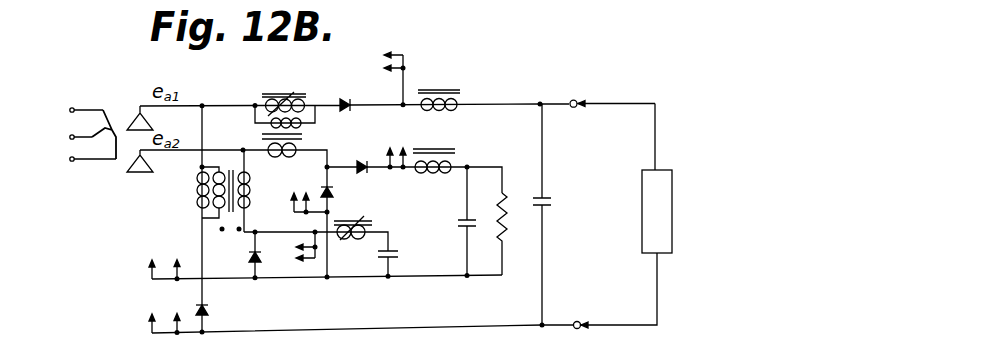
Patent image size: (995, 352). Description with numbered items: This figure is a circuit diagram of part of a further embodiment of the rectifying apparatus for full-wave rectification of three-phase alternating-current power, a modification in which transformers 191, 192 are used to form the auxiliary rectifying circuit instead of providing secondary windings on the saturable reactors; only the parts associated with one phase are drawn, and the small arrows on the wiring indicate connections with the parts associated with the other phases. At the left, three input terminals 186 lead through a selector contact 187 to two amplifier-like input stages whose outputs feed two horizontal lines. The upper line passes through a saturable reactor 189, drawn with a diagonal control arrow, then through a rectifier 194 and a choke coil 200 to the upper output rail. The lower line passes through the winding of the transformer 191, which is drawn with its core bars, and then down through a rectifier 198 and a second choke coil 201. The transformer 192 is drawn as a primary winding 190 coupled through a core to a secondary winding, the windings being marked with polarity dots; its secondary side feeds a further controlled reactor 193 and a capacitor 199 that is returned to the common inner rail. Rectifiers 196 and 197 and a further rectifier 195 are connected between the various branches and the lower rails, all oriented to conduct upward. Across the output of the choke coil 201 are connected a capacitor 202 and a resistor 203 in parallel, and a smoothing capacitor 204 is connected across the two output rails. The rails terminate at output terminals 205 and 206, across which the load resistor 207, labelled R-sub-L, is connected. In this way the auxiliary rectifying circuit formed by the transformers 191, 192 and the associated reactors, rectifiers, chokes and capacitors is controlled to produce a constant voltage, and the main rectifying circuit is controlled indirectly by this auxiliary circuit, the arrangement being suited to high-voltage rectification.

The input terminals 186 is at (73, 134).
The selector switch 187 is at (119, 122).
The adjustable inductor 189 is at (279, 93).
The transformer primary winding 190 is at (198, 199).
The transformer 191 is at (305, 138).
The transformer 192 is at (244, 177).
The adjustable inductor 193 is at (354, 226).
The diode 194 is at (345, 98).
The diode 195 is at (209, 308).
The diode 196 is at (333, 190).
The diode 197 is at (249, 257).
The diode 198 is at (356, 161).
The capacitor 199 is at (392, 255).
The inductor 200 is at (438, 89).
The inductor 201 is at (437, 142).
The capacitor 202 is at (466, 217).
The resistor 203 is at (502, 229).
The capacitor 204 is at (547, 200).
The output terminal 205 is at (574, 99).
The output terminal 206 is at (577, 329).
The load resistor 207 is at (673, 215).